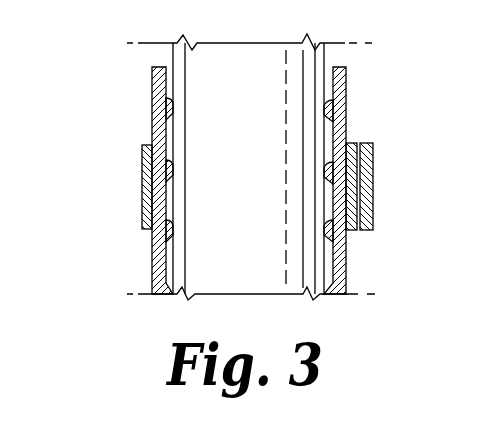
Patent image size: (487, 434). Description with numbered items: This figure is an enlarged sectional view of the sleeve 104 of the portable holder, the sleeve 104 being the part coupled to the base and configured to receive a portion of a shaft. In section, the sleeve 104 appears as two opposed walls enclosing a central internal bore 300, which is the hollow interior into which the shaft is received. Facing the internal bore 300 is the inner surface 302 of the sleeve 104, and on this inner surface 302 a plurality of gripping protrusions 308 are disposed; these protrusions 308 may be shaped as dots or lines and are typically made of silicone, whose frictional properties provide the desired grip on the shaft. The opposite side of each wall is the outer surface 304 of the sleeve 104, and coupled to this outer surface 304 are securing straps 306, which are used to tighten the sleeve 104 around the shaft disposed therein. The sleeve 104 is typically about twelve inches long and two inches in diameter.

The sleeve 104 is at (358, 92).
The internal bore 300 is at (331, 77).
The inner surface 302 is at (166, 84).
The outer surface 304 is at (152, 117).
The securing straps 306 is at (143, 192).
The gripping protrusions 308 is at (328, 108).